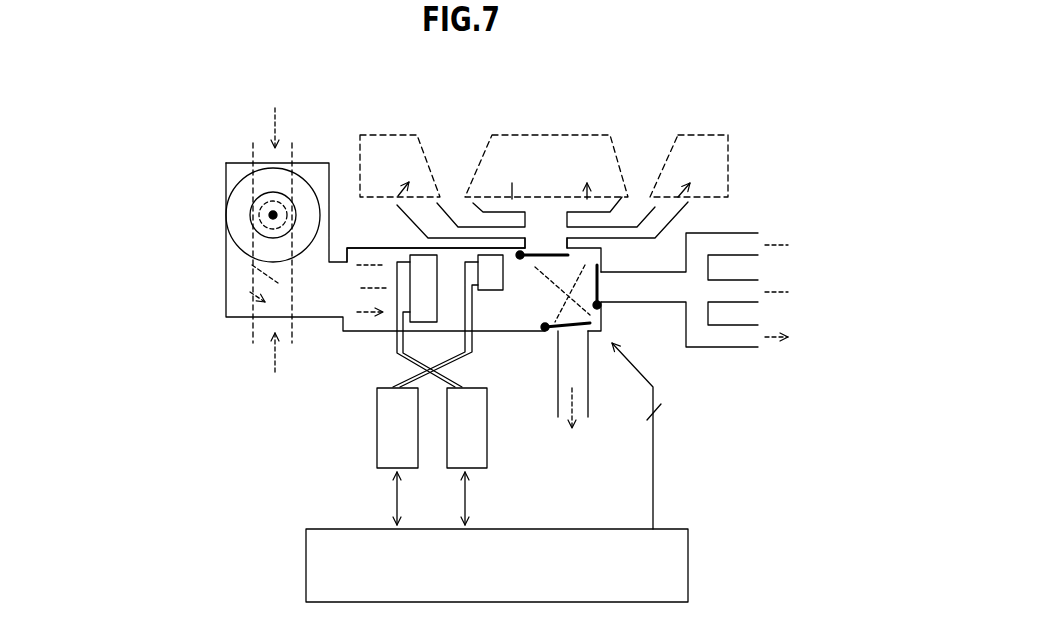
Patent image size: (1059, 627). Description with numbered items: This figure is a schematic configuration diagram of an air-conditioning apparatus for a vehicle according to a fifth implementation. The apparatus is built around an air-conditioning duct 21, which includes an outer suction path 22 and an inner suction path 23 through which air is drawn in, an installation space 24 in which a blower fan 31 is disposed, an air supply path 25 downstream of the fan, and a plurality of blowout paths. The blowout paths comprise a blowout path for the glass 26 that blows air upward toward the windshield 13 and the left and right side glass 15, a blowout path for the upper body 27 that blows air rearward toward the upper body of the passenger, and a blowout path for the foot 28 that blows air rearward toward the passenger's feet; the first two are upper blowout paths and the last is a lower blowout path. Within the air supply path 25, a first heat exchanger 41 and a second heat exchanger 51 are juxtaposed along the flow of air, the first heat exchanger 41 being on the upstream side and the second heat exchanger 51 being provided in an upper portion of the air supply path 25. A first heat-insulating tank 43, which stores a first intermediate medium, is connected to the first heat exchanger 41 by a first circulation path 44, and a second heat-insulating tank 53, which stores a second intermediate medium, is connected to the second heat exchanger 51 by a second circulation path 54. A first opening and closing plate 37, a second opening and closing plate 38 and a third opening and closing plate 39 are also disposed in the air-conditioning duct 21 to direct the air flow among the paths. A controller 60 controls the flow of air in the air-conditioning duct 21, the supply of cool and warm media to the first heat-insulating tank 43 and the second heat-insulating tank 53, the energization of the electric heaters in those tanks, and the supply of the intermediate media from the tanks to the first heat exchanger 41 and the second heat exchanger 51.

The windshield 13 is at (578, 160).
The side glass 15 is at (388, 146).
The air-conditioning duct 21 is at (332, 243).
The outer suction path 22 is at (263, 142).
The inner suction path 23 is at (263, 340).
The installation space of the blower fan 24 is at (225, 280).
The air supply path 25 is at (363, 262).
The blowout path for the glass 26 is at (605, 243).
The blowout path for the upper body 27 is at (676, 303).
The blowout path for the foot 28 is at (590, 398).
The blower fan 31 is at (225, 207).
The first opening and closing plate 37 is at (555, 248).
The second opening and closing plate 38 is at (601, 306).
The third opening and closing plate 39 is at (560, 345).
The first heat exchanger 41 is at (428, 270).
The first heat-insulating tank 43 is at (487, 452).
The first circulation path 44 is at (395, 349).
The second heat exchanger 51 is at (493, 265).
The second heat-insulating tank 53 is at (377, 443).
The second circulation path 54 is at (473, 349).
The controller 60 is at (668, 530).